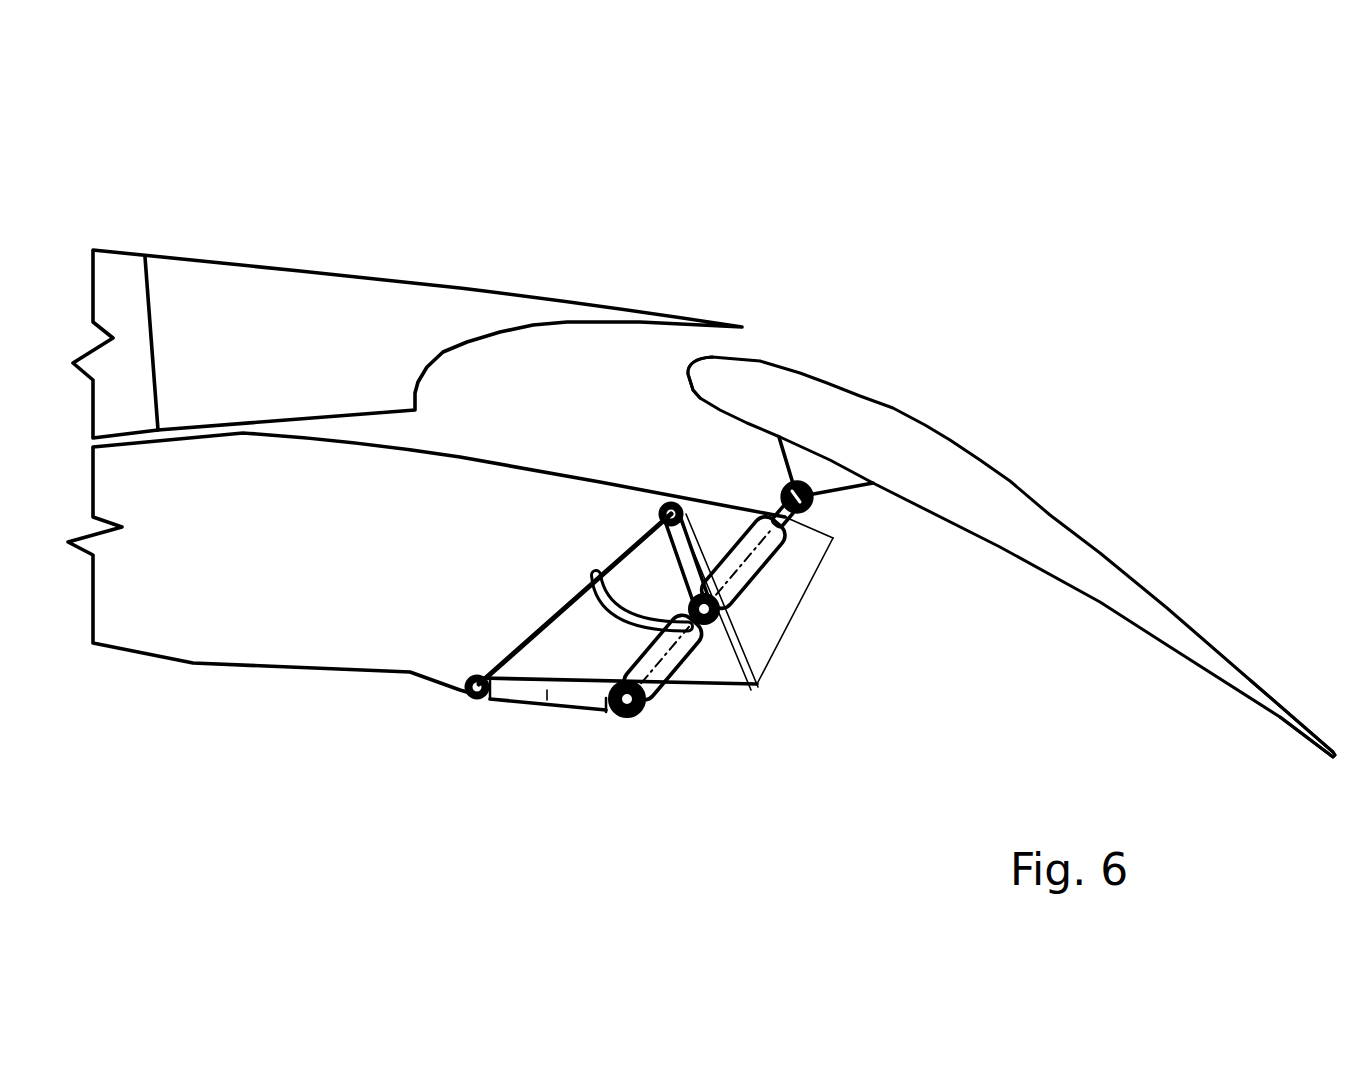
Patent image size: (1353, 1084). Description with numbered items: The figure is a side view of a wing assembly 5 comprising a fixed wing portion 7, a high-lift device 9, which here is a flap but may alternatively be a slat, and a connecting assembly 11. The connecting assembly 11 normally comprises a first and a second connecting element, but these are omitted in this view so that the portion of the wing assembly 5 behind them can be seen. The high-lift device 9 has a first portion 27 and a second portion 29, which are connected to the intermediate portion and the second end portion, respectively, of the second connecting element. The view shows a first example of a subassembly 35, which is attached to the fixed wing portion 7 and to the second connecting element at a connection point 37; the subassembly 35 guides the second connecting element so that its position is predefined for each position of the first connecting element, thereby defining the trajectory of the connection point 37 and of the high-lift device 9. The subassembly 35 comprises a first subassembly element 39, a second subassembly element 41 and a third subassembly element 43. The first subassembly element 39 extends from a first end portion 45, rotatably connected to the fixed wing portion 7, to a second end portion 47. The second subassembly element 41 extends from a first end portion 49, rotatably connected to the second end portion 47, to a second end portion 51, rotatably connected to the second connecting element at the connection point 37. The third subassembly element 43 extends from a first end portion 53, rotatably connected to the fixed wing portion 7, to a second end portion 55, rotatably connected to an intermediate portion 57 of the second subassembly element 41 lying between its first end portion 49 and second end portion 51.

The wing assembly 5 is at (608, 183).
The fixed wing portion 7 is at (572, 310).
The high-lift device 9 is at (885, 443).
The connecting assembly 11 is at (493, 825).
The first portion of the high-lift device 27 is at (822, 408).
The second portion of the high-lift device 29 is at (1030, 530).
The subassembly 35 is at (638, 745).
The connection point 37 is at (822, 503).
The first subassembly element 39 is at (547, 692).
The second subassembly element 41 is at (777, 537).
The third subassembly element 43 is at (683, 543).
The first end portion of the first subassembly element 45 is at (502, 699).
The second end portion of the first subassembly element 47 is at (598, 699).
The first end portion of the second subassembly element 49 is at (647, 712).
The second end portion of the second subassembly element 51 is at (830, 538).
The first end portion of the third subassembly element 53 is at (662, 497).
The second end portion of the third subassembly element 55 is at (730, 632).
The intermediate portion of the second subassembly element 57 is at (752, 643).